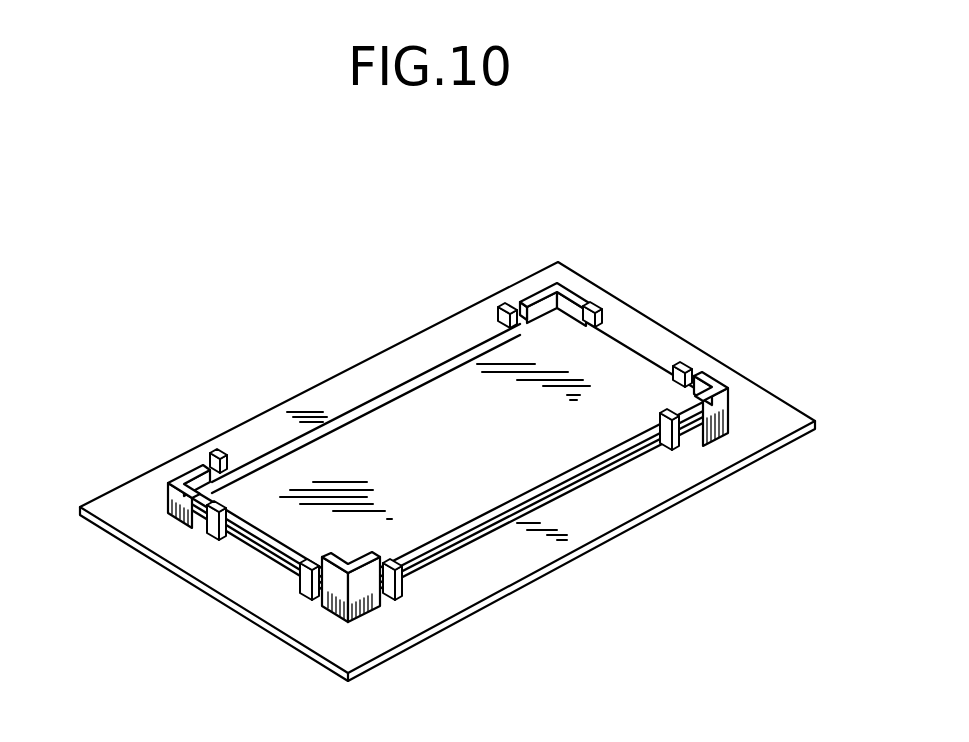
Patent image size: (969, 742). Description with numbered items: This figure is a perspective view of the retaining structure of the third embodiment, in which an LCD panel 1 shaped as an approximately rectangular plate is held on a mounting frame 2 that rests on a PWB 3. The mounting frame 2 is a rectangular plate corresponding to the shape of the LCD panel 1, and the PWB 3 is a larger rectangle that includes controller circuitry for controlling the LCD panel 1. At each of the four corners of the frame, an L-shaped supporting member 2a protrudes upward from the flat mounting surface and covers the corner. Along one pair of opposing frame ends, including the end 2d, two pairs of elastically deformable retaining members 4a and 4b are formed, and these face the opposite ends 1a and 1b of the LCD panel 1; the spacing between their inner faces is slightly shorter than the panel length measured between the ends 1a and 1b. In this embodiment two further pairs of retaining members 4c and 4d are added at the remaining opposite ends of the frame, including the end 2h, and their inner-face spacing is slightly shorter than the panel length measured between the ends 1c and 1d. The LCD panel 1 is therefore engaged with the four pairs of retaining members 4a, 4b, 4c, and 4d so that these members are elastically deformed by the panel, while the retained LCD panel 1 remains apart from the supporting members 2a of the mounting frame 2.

The LCD panel 1 is at (427, 436).
The end of LCD panel 1a is at (245, 525).
The end of LCD panel 1b is at (630, 342).
The end of LCD panel 1c is at (425, 368).
The end of LCD panel 1d is at (642, 432).
The mounting frame 2 is at (439, 471).
The supporting member 2a is at (566, 298).
The end of mounting frame 2d is at (272, 560).
The end of mounting frame 2h is at (464, 547).
The PWB 3 is at (122, 508).
The retaining member 4a is at (210, 535).
The retaining member 4b is at (302, 583).
The retaining member 4c is at (223, 452).
The retaining member 4d is at (507, 312).